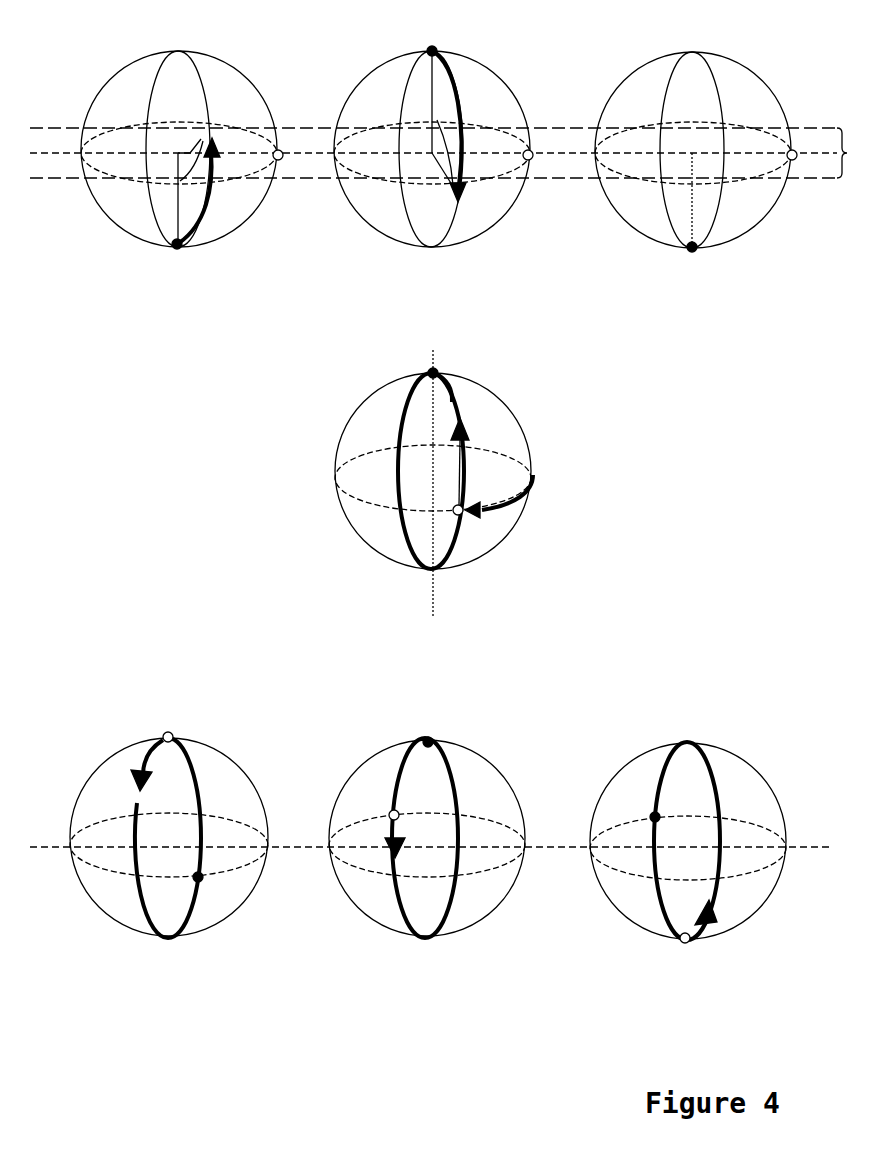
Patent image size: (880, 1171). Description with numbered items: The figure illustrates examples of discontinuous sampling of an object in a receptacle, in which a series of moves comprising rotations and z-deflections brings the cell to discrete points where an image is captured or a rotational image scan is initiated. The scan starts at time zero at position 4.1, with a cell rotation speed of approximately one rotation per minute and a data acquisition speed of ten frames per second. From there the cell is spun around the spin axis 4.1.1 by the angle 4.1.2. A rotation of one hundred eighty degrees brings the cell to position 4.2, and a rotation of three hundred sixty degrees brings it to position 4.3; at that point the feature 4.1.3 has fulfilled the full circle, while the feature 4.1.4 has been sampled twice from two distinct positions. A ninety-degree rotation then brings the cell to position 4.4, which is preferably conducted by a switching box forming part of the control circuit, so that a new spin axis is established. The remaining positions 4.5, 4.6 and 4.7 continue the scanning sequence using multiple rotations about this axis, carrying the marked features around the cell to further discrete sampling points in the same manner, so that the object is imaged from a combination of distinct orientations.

The start position 4.1 is at (207, 167).
The position after 180° rotation 4.2 is at (433, 175).
The position after 360° rotation 4.3 is at (696, 178).
The position after 90° rotation (z-deflection) 4.4 is at (434, 497).
The position 4.5 is at (169, 862).
The position 4.6 is at (427, 867).
The position 4.7 is at (688, 873).
The spin axis 4.1.1 is at (52, 153).
The angle 4.1.2 is at (190, 160).
The feature 4.1.3 is at (180, 245).
The feature 4.1.4 is at (282, 147).